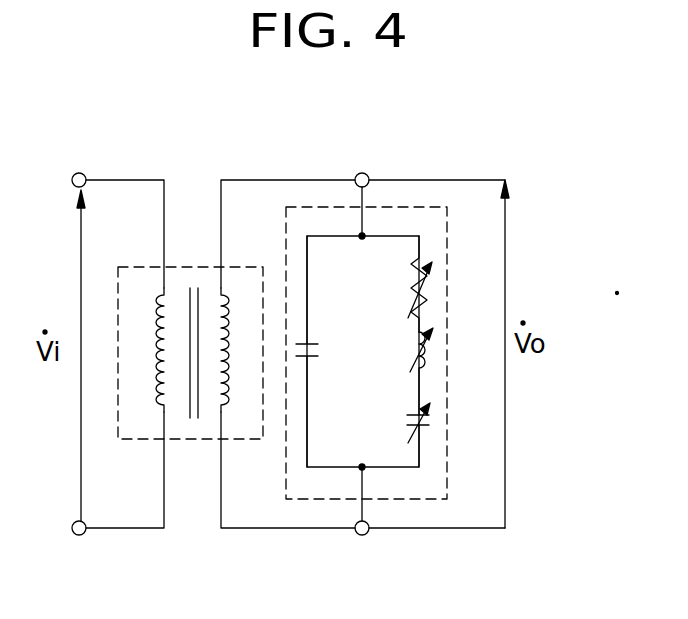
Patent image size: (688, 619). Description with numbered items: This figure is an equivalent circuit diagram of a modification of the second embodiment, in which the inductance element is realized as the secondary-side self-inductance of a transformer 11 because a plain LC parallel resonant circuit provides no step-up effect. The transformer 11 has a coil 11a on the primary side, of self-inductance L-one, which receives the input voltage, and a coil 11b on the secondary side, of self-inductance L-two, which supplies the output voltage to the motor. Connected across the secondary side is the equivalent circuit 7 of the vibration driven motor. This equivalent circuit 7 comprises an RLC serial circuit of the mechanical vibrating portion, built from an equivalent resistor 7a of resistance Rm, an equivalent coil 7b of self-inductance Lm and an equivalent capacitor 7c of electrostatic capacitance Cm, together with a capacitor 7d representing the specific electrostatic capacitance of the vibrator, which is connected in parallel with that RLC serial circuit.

The equivalent circuit of the vibration driven motor 7 is at (405, 205).
The equivalent resistor 7a is at (432, 288).
The equivalent coil 7b is at (436, 357).
The equivalent capacitor 7c is at (436, 420).
The capacitor 7d is at (324, 360).
The transformer 11 is at (195, 382).
The coil on the primary side 11a is at (152, 323).
The coil on the secondary side 11b is at (230, 323).